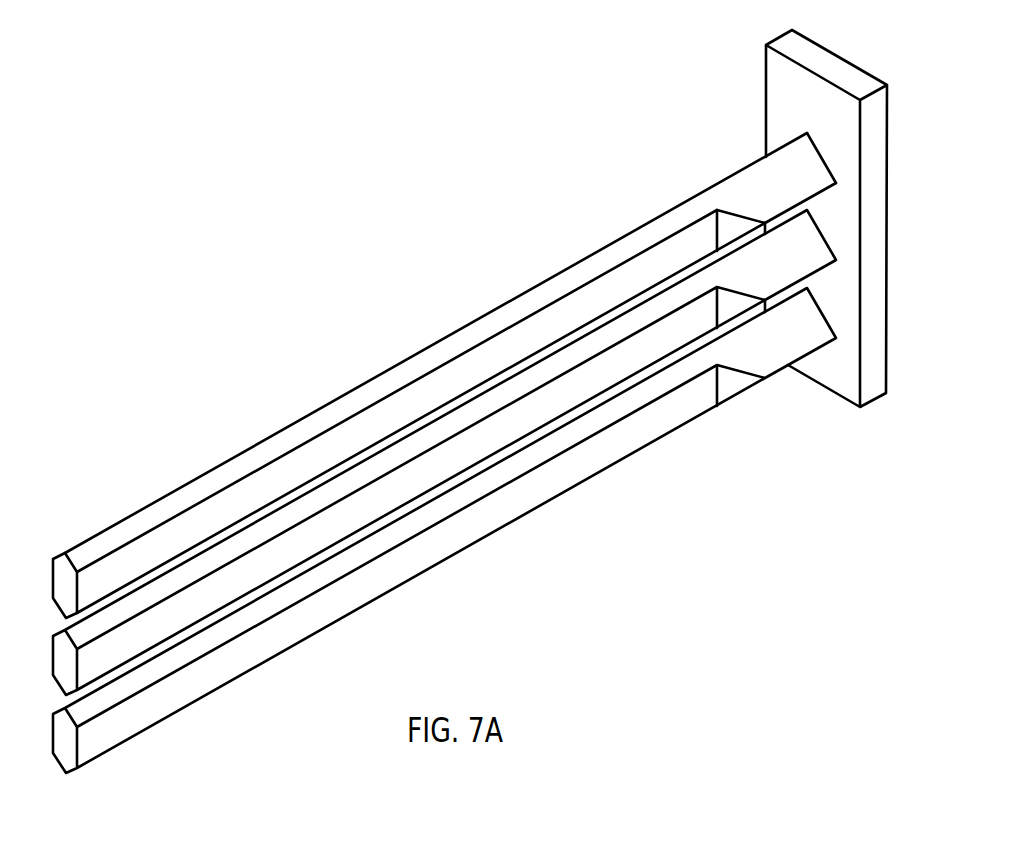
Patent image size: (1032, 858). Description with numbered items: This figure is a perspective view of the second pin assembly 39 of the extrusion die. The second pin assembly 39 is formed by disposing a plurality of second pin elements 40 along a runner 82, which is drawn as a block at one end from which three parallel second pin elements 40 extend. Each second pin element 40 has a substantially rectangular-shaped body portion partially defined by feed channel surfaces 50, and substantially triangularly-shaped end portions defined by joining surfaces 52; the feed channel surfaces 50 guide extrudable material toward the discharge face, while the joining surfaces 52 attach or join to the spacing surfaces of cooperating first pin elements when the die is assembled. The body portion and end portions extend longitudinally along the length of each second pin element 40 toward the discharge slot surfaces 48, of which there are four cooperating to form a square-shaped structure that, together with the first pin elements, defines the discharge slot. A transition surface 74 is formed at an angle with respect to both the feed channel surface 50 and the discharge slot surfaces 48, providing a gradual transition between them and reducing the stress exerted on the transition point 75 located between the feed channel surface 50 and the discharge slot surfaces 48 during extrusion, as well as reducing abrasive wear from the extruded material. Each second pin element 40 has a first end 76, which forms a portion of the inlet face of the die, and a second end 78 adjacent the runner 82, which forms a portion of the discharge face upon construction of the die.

The second pin assembly 39 is at (313, 395).
The second pin element 40 is at (415, 355).
The discharge slot surfaces 48 is at (810, 155).
The feed channel surfaces 50 is at (295, 465).
The joining surfaces 52 is at (167, 508).
The transition surface 74 is at (737, 225).
The transition point 75 is at (713, 236).
The first end 76 is at (62, 565).
The second end 78 is at (835, 173).
The runner 82 is at (888, 377).